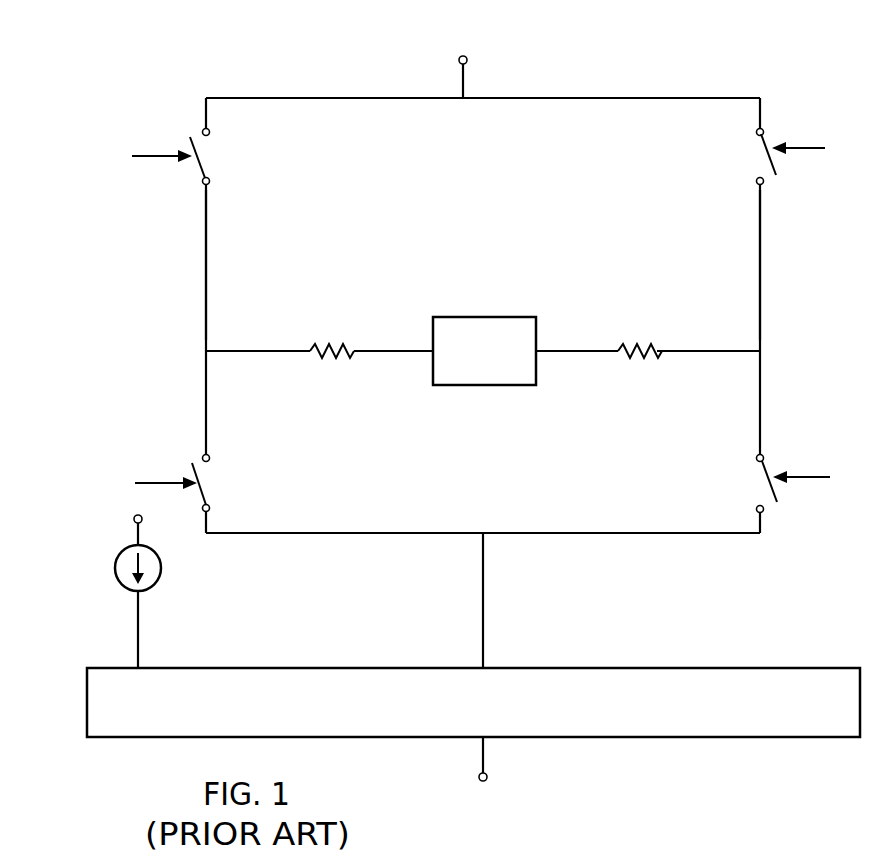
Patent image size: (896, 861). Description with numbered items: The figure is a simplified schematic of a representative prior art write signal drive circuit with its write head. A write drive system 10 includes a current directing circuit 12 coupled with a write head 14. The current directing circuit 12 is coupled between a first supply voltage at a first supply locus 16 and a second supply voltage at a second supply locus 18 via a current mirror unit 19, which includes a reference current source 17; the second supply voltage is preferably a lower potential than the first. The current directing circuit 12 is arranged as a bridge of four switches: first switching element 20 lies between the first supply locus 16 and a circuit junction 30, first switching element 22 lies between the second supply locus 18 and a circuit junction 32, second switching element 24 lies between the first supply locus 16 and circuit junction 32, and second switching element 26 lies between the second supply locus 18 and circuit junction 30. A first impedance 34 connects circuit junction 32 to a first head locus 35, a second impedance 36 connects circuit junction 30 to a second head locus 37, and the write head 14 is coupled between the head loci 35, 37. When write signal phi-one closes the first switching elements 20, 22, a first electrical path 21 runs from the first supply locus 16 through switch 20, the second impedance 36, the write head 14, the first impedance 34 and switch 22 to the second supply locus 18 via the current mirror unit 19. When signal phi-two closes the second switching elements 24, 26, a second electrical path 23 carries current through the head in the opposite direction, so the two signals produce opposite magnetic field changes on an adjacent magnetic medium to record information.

The write drive system 10 is at (783, 817).
The current directing circuit 12 is at (701, 46).
The write head 14 is at (475, 317).
The first supply locus 16 is at (458, 57).
The reference current source 17 is at (118, 582).
The second supply locus 18 is at (488, 778).
The current mirror unit 19 is at (618, 668).
The first switching element 20 is at (775, 165).
The first electrical path 21 is at (739, 215).
The first switching element 22 is at (192, 463).
The second electrical path 23 is at (254, 278).
The second switching element 24 is at (190, 140).
The second switching element 26 is at (778, 500).
The circuit junction 30 is at (760, 349).
The circuit junction 32 is at (205, 350).
The first impedance 34 is at (338, 344).
The first head locus 35 is at (413, 350).
The second impedance 36 is at (641, 334).
The second head locus 37 is at (567, 350).